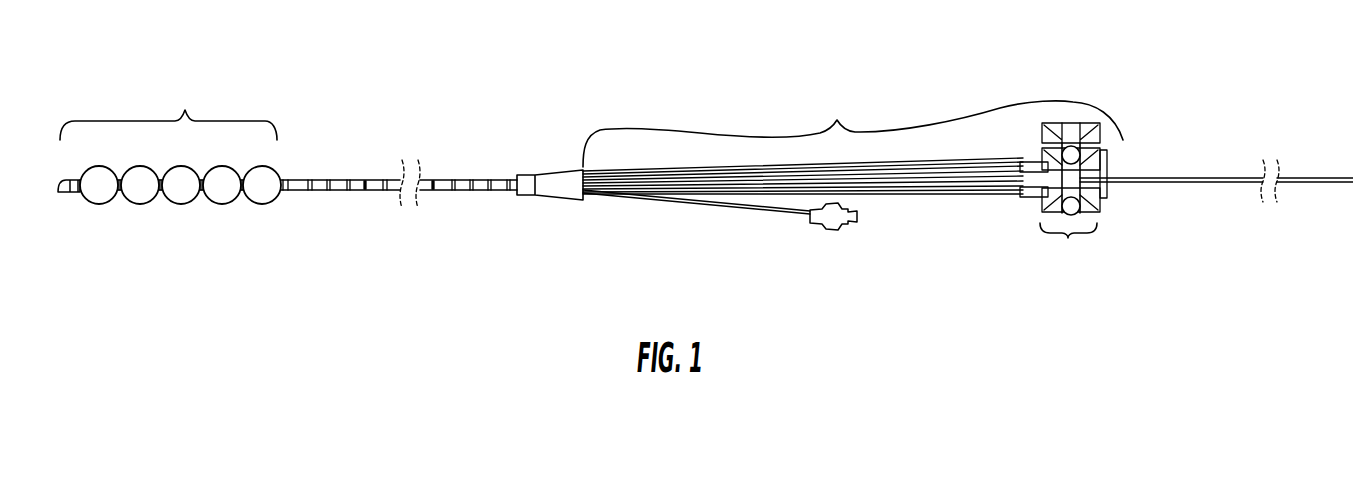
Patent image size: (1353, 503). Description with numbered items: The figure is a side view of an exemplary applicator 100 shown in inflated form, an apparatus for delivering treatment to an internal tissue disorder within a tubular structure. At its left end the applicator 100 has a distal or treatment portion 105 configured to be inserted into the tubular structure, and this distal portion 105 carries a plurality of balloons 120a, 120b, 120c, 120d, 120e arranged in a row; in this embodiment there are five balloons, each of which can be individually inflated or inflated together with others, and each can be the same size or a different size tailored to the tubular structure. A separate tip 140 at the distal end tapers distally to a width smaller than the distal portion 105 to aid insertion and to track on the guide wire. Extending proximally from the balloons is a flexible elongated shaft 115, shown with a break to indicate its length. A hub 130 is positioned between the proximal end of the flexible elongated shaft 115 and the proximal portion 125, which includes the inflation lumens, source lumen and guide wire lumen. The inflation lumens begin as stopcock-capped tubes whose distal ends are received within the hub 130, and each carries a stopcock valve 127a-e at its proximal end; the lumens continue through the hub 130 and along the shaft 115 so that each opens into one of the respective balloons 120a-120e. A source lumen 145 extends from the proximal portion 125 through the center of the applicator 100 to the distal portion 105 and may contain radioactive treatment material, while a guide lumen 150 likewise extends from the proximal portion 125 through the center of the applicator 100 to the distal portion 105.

The applicator 100 is at (653, 100).
The distal portion 105 is at (185, 110).
The flexible elongated shaft 115 is at (375, 180).
The balloon 120a is at (98, 205).
The balloon 120b is at (140, 205).
The balloon 120c is at (183, 205).
The balloon 120d is at (222, 205).
The balloon 120e is at (267, 205).
The proximal portion 125 is at (837, 120).
The stopcock valves 127a-e is at (1068, 238).
The hub 130 is at (557, 187).
The tip 140 is at (63, 193).
The source lumen 145 is at (1202, 183).
The guide lumen 150 is at (755, 212).